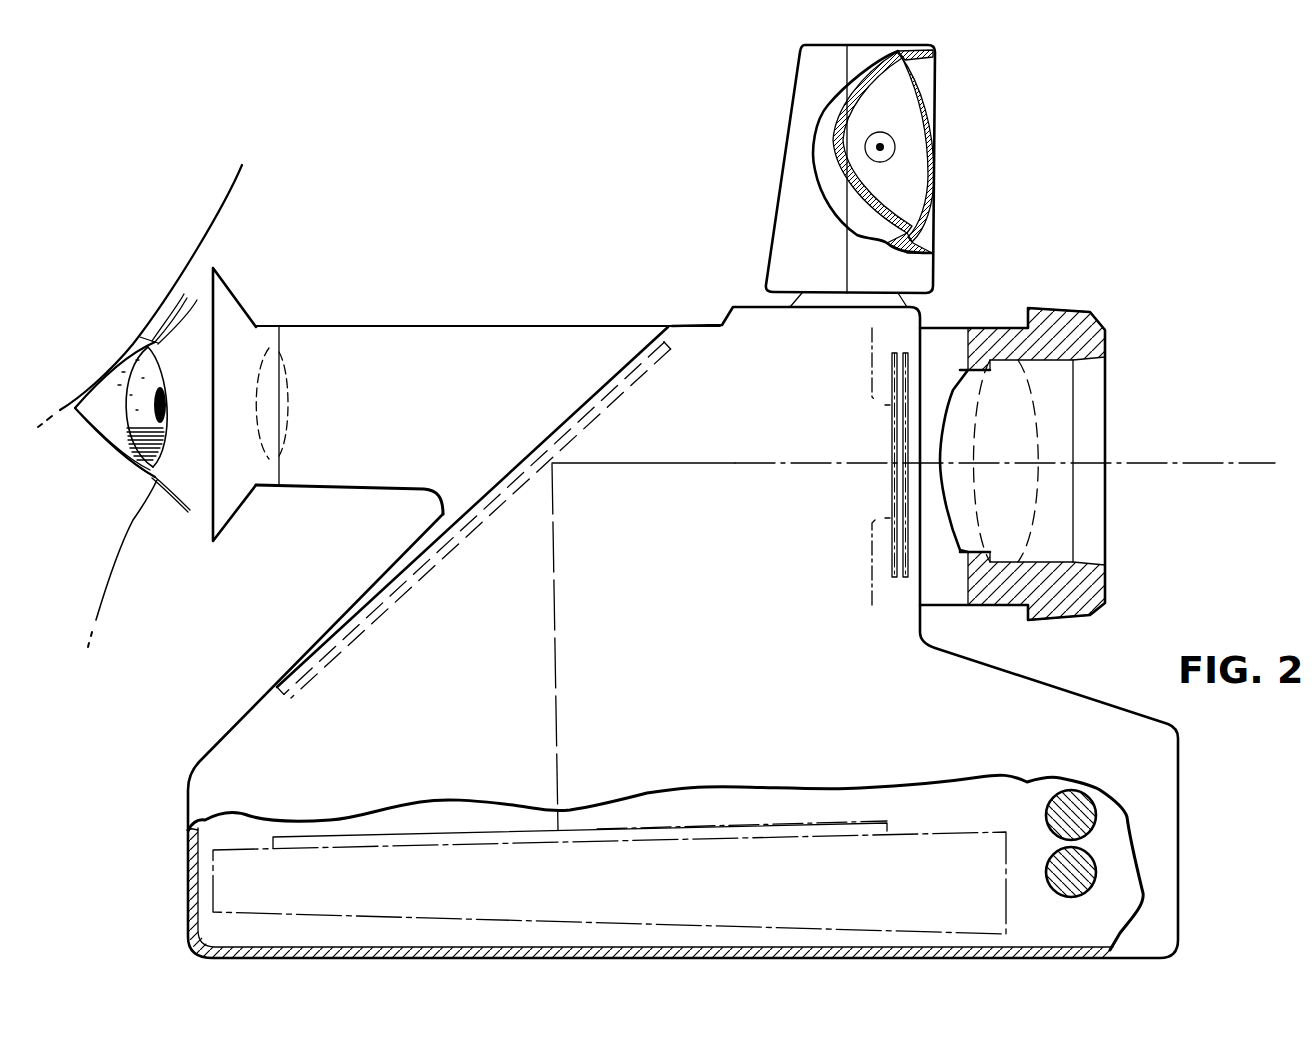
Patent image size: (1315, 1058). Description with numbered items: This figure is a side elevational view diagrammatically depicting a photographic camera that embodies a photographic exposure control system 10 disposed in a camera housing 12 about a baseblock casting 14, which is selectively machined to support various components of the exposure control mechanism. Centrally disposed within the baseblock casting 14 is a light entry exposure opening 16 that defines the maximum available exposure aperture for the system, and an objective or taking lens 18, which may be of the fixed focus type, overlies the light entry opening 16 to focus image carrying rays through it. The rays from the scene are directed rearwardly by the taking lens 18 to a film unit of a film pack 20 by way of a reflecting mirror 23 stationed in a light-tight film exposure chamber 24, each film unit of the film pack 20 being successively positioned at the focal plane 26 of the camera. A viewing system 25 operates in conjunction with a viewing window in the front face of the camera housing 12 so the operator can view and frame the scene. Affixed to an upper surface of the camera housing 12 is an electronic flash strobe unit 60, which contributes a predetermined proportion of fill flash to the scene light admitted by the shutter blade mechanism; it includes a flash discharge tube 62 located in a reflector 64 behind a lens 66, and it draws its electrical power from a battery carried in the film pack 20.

The photographic exposure control system 10 is at (866, 486).
The camera housing 12 is at (692, 316).
The baseblock casting 14 is at (875, 518).
The light entry exposure opening 16 is at (875, 400).
The taking lens 18 is at (1038, 412).
The film pack 20 is at (252, 840).
The mirror 23 is at (436, 564).
The film exposure chamber 24 is at (427, 818).
The viewing system 25 is at (418, 325).
The focal plane 26 is at (597, 828).
The electronic flash strobe unit 60 is at (790, 70).
The flash discharge tube 62 is at (880, 162).
The reflector 64 is at (863, 105).
The lens 66 is at (930, 108).